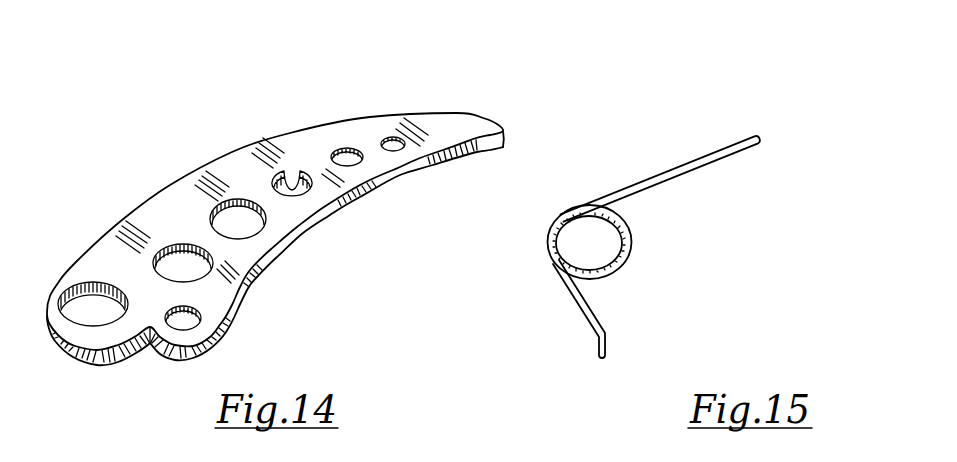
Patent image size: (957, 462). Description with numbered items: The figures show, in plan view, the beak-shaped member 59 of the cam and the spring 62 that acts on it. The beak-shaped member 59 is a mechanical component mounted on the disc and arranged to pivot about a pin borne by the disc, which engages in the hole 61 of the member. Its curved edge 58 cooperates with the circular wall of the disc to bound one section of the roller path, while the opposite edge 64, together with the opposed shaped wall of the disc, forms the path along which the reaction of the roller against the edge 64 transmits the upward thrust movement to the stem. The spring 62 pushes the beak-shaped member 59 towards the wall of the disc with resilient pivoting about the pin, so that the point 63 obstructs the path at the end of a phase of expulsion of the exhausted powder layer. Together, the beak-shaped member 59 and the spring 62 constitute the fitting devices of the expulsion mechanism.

In FIG. 14, the curved edge 58 is at (232, 152).
In FIG. 14, the beak-shaped member 59 is at (320, 140).
In FIG. 14, the hole 61 is at (190, 320).
In FIG. 15, the spring 62 is at (628, 190).
In FIG. 14, the point 63 is at (460, 118).
In FIG. 14, the edge 64 is at (367, 197).